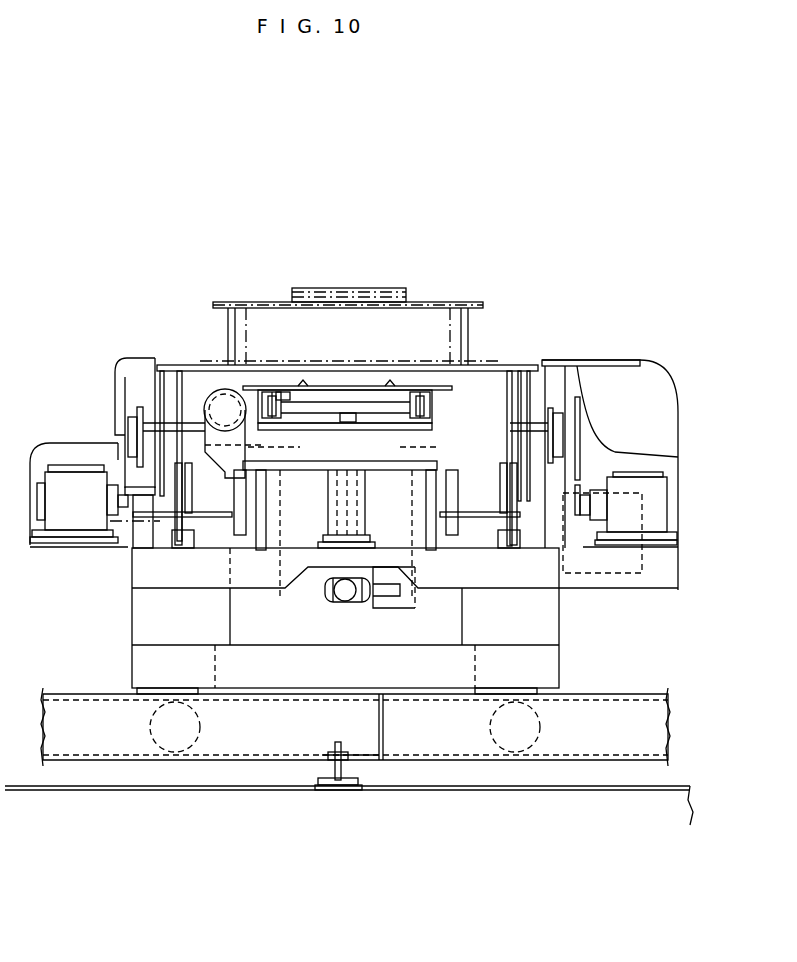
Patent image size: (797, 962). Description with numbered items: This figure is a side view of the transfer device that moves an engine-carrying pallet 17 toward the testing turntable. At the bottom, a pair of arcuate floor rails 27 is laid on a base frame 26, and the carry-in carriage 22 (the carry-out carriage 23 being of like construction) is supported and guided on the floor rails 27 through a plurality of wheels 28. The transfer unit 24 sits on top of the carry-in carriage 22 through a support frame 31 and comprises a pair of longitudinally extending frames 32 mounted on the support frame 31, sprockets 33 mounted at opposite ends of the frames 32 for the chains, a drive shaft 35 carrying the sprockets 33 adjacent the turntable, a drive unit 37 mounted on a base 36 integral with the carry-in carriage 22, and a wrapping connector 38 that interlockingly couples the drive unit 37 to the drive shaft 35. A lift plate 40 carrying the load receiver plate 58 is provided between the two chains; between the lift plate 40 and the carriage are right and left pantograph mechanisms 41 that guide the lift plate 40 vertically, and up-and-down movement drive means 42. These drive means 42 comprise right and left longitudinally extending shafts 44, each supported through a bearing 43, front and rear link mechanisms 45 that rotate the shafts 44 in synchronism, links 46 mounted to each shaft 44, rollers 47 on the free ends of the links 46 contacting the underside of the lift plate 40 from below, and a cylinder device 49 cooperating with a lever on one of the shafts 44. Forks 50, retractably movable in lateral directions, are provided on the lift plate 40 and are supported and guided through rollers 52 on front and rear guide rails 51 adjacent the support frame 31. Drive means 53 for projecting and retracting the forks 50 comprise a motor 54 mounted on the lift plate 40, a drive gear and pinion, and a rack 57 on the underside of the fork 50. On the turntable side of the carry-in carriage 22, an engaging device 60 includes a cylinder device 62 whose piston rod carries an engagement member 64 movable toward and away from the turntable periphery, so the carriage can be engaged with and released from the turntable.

The pallet 17 is at (445, 300).
The load receiver plate 58 is at (412, 300).
The sprockets 33 is at (185, 377).
The longitudinally extending frames 32 is at (148, 378).
The transfer unit 24 is at (537, 403).
The drive shaft 35 is at (188, 427).
The lift plate 40 is at (367, 440).
The guide rails 51 is at (272, 400).
The rollers 52 is at (287, 402).
The forks 50 is at (293, 400).
The rack 57 is at (345, 413).
The links 46 is at (270, 457).
The pantograph mechanisms 41 is at (327, 502).
The rollers 47 is at (258, 552).
The bearing 43 is at (218, 502).
The longitudinally extending shafts 44 is at (452, 510).
The link mechanisms 45 is at (178, 548).
The motor 54 is at (72, 520).
The drive means 53 is at (72, 465).
The drive unit 37 is at (660, 515).
The base 36 is at (657, 547).
The wrapping connector 38 is at (593, 468).
The cylinder device 49 is at (640, 577).
The up-and-down movement drive means 42 is at (518, 528).
The support frame 31 is at (143, 542).
The cylinder device 62 is at (402, 607).
The engaging device 60 is at (357, 612).
The engagement member 64 is at (347, 597).
The carry-in carriage 22 is at (415, 683).
The carry-out carriage 23 is at (548, 672).
The floor rails 27 is at (103, 745).
The wheels 28 is at (200, 752).
The base frame 26 is at (338, 790).